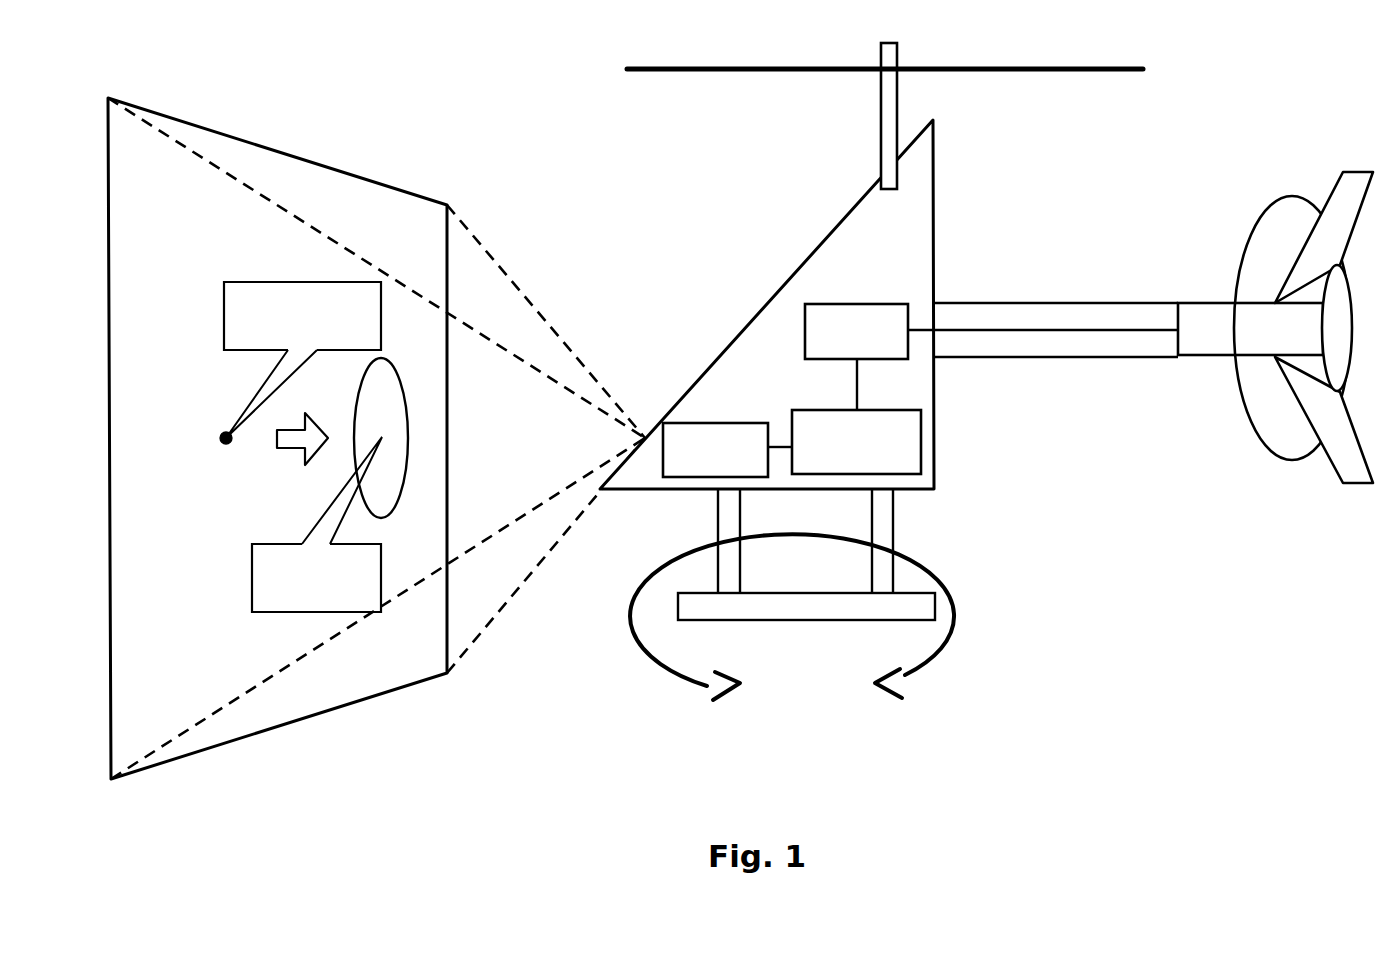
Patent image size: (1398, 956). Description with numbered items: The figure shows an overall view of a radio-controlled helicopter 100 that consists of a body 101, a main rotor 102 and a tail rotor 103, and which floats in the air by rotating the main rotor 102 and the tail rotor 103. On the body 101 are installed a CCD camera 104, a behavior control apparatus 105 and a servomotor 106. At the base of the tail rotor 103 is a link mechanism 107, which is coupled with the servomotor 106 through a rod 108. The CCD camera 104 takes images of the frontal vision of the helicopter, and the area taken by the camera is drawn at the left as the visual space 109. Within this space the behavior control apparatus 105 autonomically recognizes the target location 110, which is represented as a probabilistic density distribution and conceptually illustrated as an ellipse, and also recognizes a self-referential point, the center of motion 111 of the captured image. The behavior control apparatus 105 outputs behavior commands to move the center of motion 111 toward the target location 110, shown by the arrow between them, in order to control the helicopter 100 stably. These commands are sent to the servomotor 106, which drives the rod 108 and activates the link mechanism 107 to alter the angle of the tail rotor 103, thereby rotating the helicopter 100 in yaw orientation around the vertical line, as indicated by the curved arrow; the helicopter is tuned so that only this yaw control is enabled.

The RC helicopter 100 is at (1063, 487).
The body 101 is at (937, 448).
The main rotor 102 is at (961, 66).
The tail rotor 103 is at (1292, 195).
The CCD camera 104 is at (754, 422).
The behavior control apparatus 105 is at (874, 408).
The servomotor 106 is at (877, 303).
The link mechanism 107 is at (1242, 303).
The rod 108 is at (1017, 328).
The visual space 109 is at (368, 177).
The target location 110 is at (400, 383).
The center of motion (COM) 111 is at (212, 427).